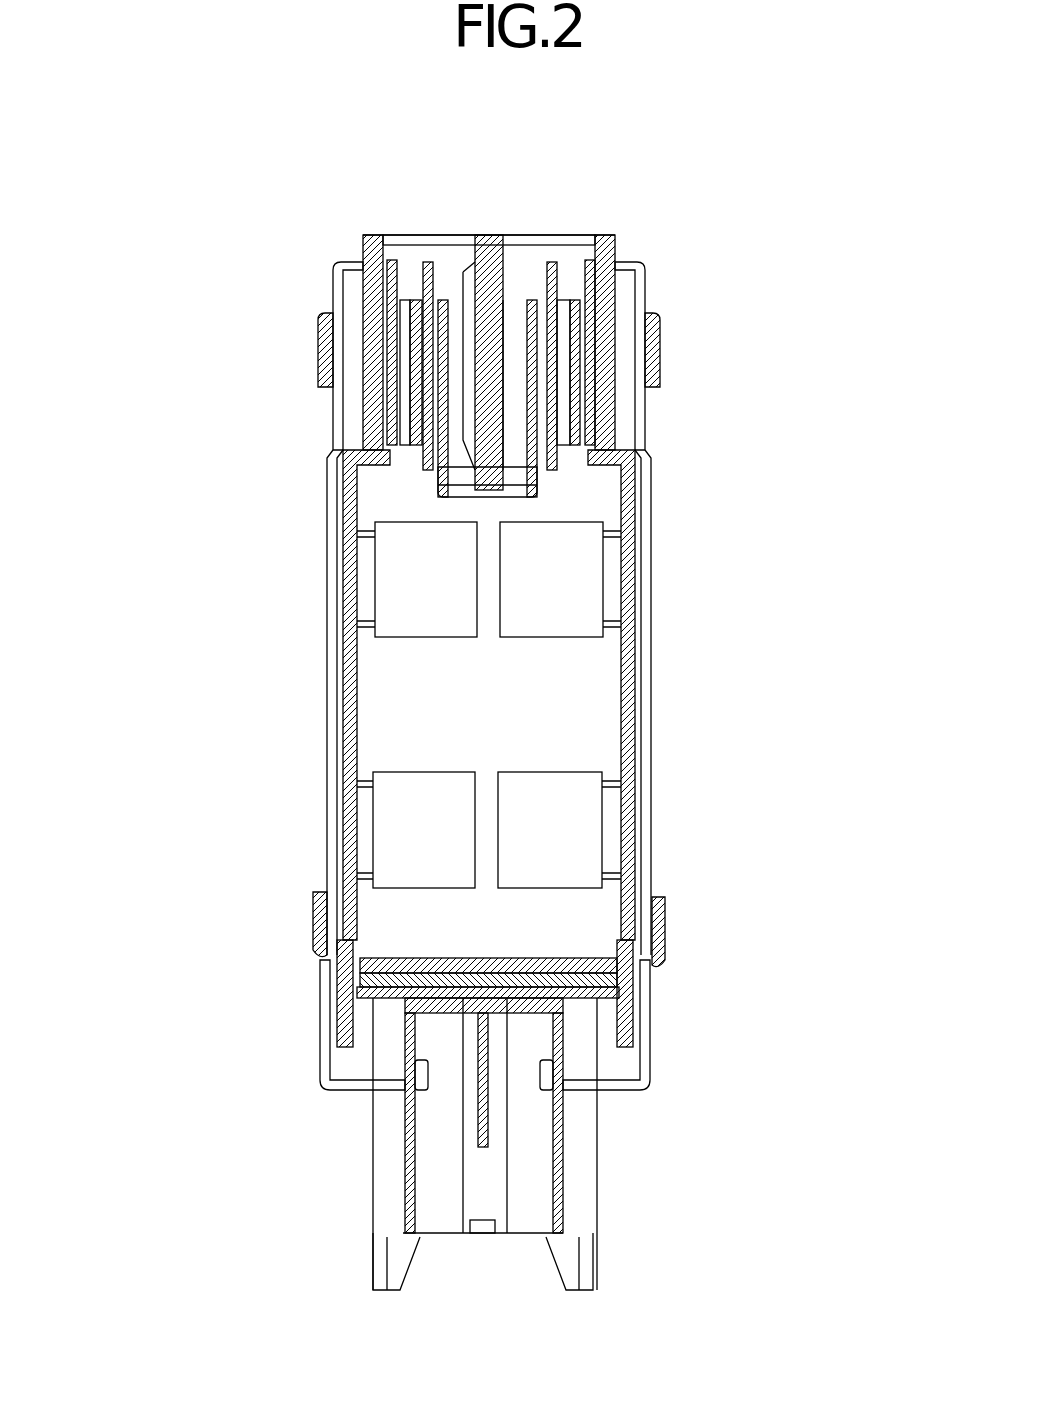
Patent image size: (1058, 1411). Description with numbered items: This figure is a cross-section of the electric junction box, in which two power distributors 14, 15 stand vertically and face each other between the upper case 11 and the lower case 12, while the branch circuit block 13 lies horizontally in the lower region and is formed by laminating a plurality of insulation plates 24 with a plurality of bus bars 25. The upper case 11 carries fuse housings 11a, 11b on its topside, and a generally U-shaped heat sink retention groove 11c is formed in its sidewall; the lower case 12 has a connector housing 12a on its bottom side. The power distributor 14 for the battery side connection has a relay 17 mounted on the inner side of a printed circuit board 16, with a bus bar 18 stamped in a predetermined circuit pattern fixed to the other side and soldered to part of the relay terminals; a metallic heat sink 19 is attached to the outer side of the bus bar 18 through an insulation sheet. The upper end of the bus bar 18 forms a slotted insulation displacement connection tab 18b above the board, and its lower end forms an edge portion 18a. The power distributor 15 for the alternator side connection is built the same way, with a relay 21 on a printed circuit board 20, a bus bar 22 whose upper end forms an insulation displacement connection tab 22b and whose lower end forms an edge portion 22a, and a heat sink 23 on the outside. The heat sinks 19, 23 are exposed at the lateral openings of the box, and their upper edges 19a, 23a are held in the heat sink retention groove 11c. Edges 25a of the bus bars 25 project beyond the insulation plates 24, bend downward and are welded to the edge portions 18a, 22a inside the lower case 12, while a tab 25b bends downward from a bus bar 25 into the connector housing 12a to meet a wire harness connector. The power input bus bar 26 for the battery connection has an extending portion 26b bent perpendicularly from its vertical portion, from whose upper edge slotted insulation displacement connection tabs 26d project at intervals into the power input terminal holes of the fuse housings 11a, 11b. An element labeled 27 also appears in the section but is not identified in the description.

The upper case 11 is at (644, 268).
The fuse housing 11a is at (538, 282).
The fuse housing 11b is at (440, 275).
The heat sink retention groove 11c is at (320, 352).
The lower case 12 is at (652, 1092).
The connector housing 12a is at (373, 1238).
The branch circuit block 13 is at (600, 946).
The power distributor 14 is at (747, 557).
The power distributor 15 is at (220, 538).
The printed circuit board 16 is at (625, 557).
The relay 17 is at (625, 600).
The bus bar 18 is at (630, 642).
The edge portion 18a is at (650, 1063).
The insulation displacement connection tab 18b is at (590, 265).
The heat sink 19 is at (645, 687).
The upper edge 19a is at (657, 318).
The printed circuit board 20 is at (350, 560).
The relay 21 is at (345, 598).
The bus bar 22 is at (340, 628).
The edge portion 22a is at (345, 1060).
The insulation displacement connection tab 22b is at (392, 262).
The heat sink 23 is at (325, 676).
The upper edge 23a is at (338, 318).
The insulation plate 24 is at (640, 990).
The bus bar 25 is at (345, 984).
The edge 25a is at (358, 1055).
The tab 25b is at (475, 1147).
The bus bar 26 is at (527, 282).
The extending portion 26b is at (558, 465).
The insulation displacement connection tab 26d is at (553, 262).
The spring 27 is at (428, 272).